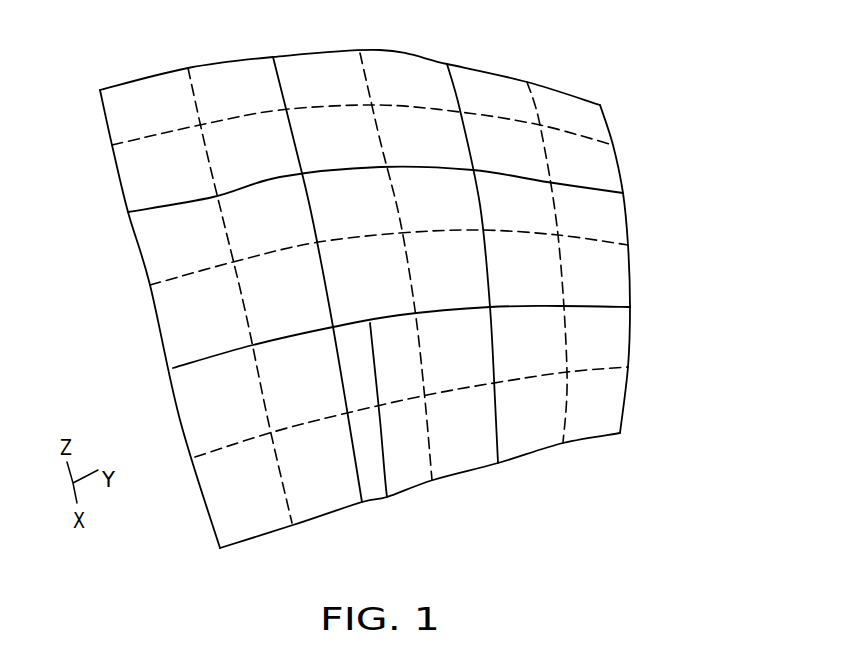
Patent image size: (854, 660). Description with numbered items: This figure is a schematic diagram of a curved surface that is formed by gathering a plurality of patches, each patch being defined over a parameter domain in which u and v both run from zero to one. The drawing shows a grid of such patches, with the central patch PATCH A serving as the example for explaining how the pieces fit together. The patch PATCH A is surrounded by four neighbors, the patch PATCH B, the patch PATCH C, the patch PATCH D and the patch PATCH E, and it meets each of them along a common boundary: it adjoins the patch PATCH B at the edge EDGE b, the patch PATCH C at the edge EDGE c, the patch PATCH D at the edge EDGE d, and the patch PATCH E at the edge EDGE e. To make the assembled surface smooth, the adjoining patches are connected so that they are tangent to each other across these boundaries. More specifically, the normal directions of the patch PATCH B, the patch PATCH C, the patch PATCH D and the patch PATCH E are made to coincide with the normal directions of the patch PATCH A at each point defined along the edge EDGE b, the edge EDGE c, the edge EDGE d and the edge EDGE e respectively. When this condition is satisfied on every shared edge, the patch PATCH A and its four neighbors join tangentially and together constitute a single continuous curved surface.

The patch A PATCH A is at (445, 198).
The patch B PATCH B is at (607, 218).
The patch C PATCH C is at (398, 83).
The patch D PATCH D is at (182, 325).
The patch E PATCH E is at (465, 450).
The edge b EDGE b is at (480, 203).
The edge c EDGE c is at (415, 167).
The edge d EDGE d is at (307, 212).
The edge e EDGE e is at (387, 497).